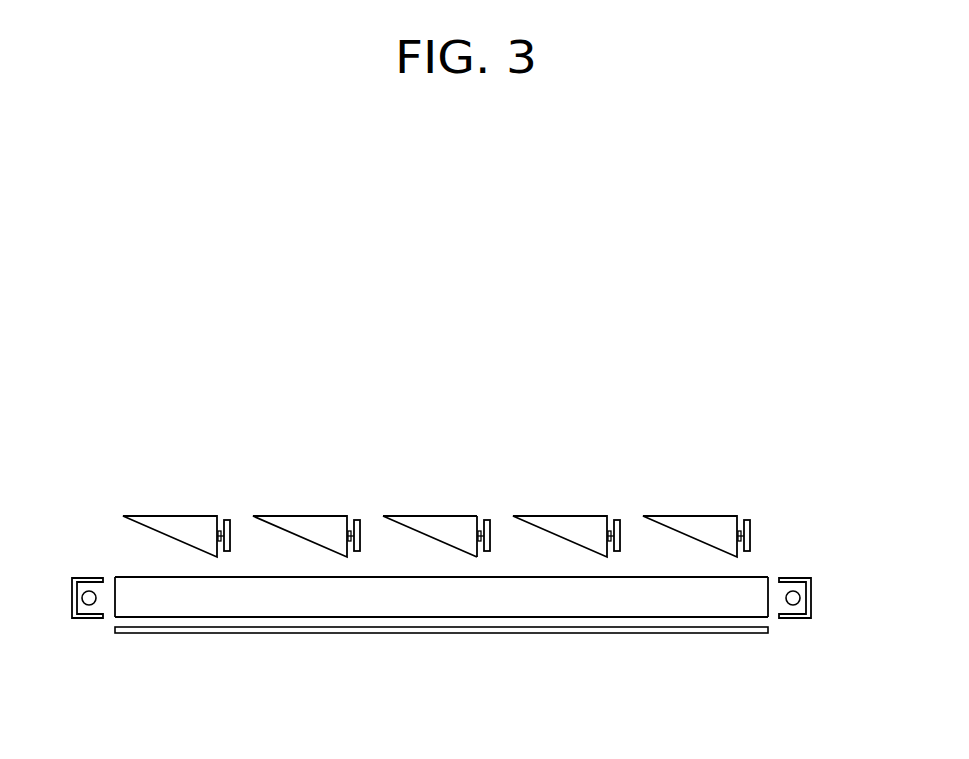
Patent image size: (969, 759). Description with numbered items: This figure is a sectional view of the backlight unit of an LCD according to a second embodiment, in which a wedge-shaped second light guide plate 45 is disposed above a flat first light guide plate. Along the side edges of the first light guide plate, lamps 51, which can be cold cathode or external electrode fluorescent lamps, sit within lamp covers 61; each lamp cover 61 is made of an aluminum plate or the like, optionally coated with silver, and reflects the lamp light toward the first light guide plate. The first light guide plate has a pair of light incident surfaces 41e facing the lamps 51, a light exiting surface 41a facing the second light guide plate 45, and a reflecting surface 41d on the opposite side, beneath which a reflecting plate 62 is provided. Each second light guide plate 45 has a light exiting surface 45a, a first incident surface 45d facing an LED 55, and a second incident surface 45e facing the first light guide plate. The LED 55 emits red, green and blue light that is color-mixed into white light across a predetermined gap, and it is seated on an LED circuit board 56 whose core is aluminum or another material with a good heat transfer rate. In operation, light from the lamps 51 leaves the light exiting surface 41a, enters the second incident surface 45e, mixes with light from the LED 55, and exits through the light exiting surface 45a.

The second light guide plate 45 is at (152, 515).
The light emitting diode 55 is at (220, 530).
The LED circuit board 56 is at (231, 520).
The light exiting surface 45a is at (430, 516).
The second incident surface 45e is at (427, 536).
The first incident surface 45d is at (486, 520).
The light exiting surface 41a is at (130, 577).
The light incident surface 41e is at (114, 618).
The reflecting surface 41d is at (185, 618).
The reflecting plate 62 is at (683, 634).
The lamp cover 61 is at (811, 582).
The lamp 51 is at (800, 598).